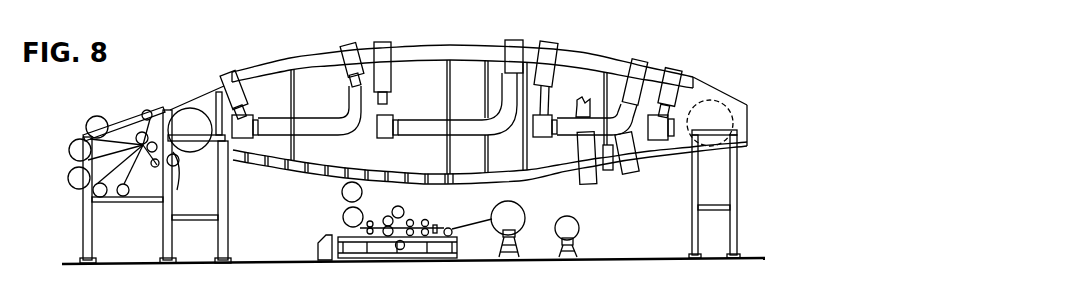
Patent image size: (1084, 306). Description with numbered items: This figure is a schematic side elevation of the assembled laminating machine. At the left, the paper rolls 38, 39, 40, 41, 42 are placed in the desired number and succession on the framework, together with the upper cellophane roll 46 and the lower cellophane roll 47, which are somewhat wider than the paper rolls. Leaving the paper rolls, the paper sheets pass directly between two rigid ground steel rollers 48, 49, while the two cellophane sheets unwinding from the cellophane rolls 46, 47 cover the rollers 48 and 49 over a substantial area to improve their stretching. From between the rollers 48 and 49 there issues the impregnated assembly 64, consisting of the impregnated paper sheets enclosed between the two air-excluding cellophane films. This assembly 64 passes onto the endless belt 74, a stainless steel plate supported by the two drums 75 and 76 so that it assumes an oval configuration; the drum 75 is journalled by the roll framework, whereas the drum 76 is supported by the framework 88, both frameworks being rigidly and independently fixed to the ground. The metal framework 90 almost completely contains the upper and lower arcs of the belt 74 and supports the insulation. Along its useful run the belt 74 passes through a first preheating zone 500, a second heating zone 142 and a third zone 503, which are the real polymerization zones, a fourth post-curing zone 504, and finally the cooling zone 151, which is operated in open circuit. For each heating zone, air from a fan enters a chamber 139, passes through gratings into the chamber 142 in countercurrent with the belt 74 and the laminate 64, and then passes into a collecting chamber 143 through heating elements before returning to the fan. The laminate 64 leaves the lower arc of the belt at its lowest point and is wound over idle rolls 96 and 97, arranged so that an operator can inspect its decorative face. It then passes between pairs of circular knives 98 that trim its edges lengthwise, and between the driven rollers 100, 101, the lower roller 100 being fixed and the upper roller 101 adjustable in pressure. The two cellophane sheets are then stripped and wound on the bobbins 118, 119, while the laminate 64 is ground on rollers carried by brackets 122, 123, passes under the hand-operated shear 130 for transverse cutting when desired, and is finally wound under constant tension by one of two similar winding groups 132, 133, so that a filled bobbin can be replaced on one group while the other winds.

The paper roll 38 is at (122, 197).
The paper roll 39 is at (100, 198).
The paper roll 40 is at (68, 182).
The paper roll 41 is at (69, 148).
The paper roll 42 is at (98, 116).
The upper cellophane roll 46 is at (148, 109).
The lower cellophane roll 47 is at (177, 165).
The ground steel roller 48 is at (138, 131).
The ground steel roller 49 is at (144, 160).
The impregnated assembly 64 is at (157, 113).
The endless belt 74 is at (193, 100).
The drum 75 is at (205, 158).
The drum 76 is at (724, 103).
The framework 88 is at (738, 222).
The metal framework 90 is at (292, 178).
The idle roll 96 is at (342, 192).
The idle roll 97 is at (343, 217).
The circular knives 98 is at (371, 234).
The lower driven roller 100 is at (389, 236).
The upper driven roller 101 is at (393, 216).
The bobbin 118 is at (400, 206).
The bobbin 119 is at (404, 250).
The bracket 122 is at (435, 220).
The bracket 123 is at (411, 219).
The hand-operated shear 130 is at (452, 229).
The winding group 132 is at (520, 238).
The winding group 133 is at (580, 244).
The chamber 139 is at (513, 45).
The second heating zone chamber 142 is at (414, 52).
The collecting chamber 143 is at (348, 52).
The cooling zone 151 is at (559, 174).
The first heating zone 500 is at (256, 69).
The third heating zone 503 is at (597, 50).
The fourth heating zone 504 is at (670, 170).